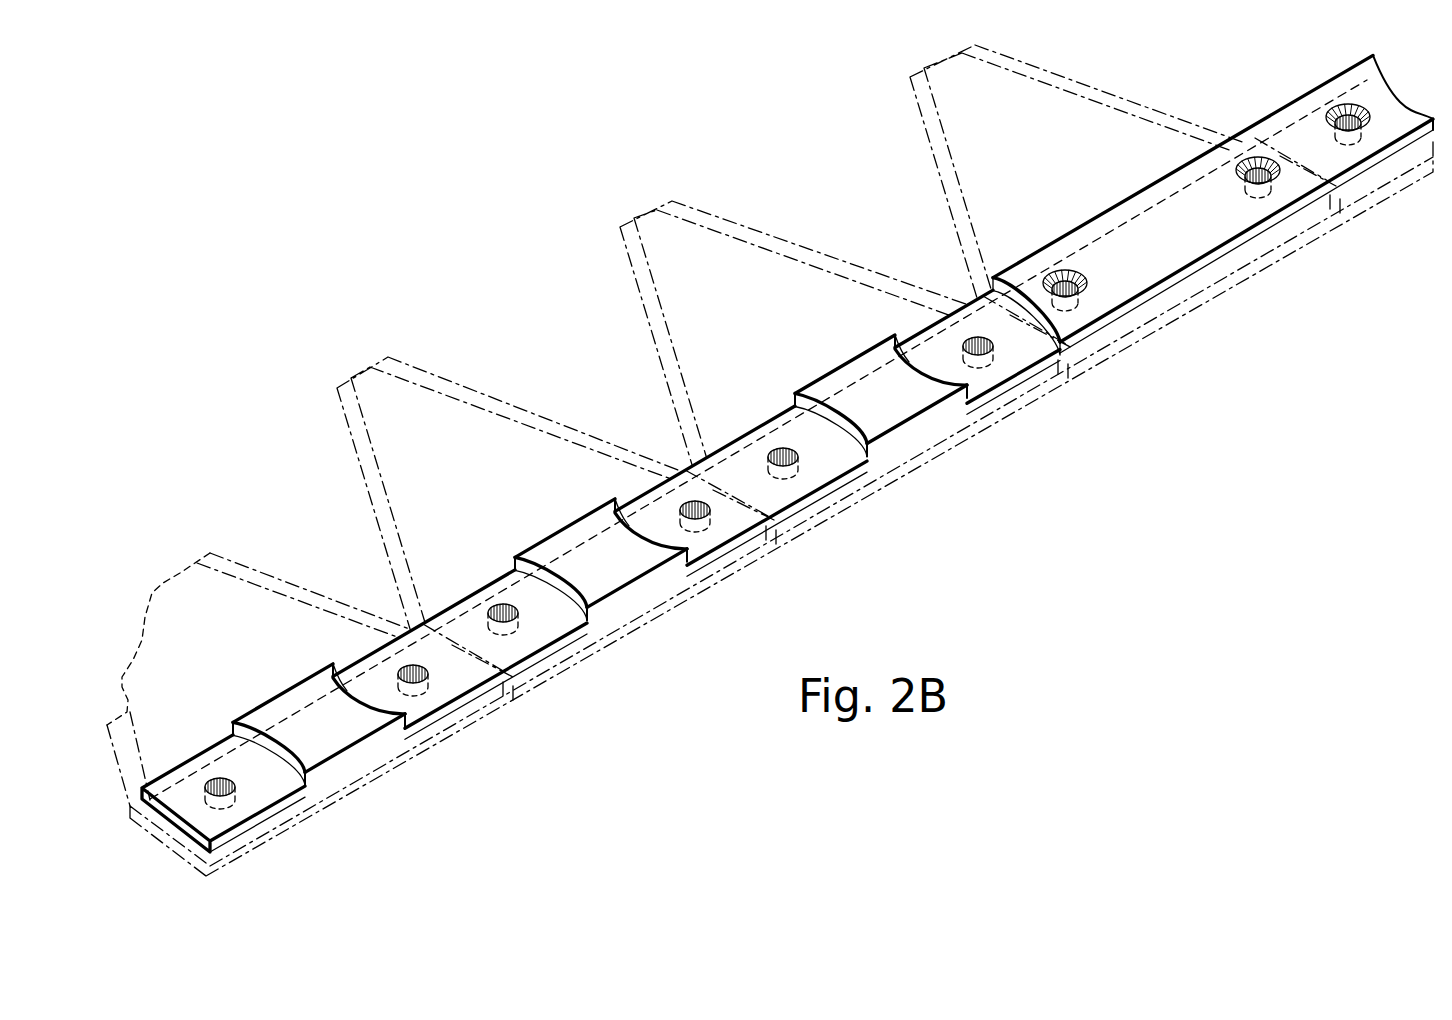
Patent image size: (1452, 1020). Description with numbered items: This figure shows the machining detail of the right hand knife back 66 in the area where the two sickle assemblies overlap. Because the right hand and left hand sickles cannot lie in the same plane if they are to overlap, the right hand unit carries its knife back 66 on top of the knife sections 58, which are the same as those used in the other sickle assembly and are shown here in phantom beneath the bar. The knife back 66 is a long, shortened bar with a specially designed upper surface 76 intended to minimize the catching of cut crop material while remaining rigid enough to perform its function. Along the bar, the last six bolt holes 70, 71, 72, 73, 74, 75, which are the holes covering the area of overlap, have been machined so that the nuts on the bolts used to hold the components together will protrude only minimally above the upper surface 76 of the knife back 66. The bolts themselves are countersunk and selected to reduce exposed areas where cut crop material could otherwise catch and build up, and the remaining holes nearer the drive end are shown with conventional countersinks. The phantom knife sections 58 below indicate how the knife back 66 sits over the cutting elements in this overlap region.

The knife sections 58 is at (680, 267).
The knife back 66 is at (1131, 243).
The bolt hole 70 is at (234, 789).
The bolt hole 71 is at (427, 676).
The bolt hole 72 is at (517, 616).
The bolt hole 73 is at (709, 513).
The bolt hole 74 is at (797, 459).
The bolt hole 75 is at (992, 349).
The upper surface 76 is at (892, 412).